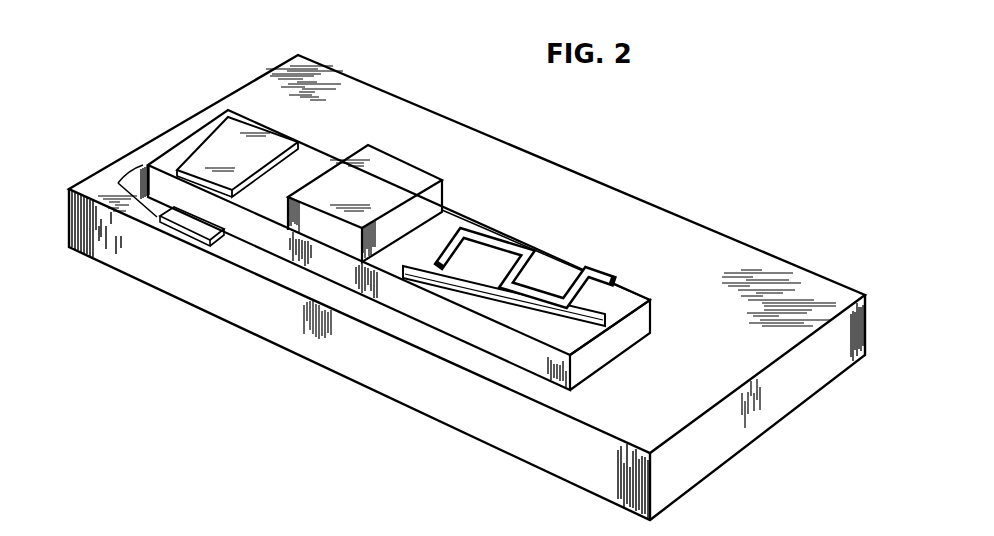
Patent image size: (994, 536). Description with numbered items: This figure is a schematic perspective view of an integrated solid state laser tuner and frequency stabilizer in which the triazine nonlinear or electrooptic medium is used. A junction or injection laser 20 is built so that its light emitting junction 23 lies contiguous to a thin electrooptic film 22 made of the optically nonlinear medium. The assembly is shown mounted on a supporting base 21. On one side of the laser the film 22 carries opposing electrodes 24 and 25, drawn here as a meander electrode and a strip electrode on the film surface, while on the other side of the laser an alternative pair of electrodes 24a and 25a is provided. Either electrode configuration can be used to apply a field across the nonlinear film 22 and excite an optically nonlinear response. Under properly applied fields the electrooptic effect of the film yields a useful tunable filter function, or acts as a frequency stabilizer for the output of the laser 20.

The junction or injection laser 20 is at (402, 177).
The base substrate 21 is at (215, 285).
The electrooptic film 22 is at (607, 288).
The light emitting junction 23 is at (327, 250).
The electrode 24 is at (527, 257).
The electrode 24a is at (174, 225).
The electrode 25 is at (502, 310).
The electrode 25a is at (278, 138).